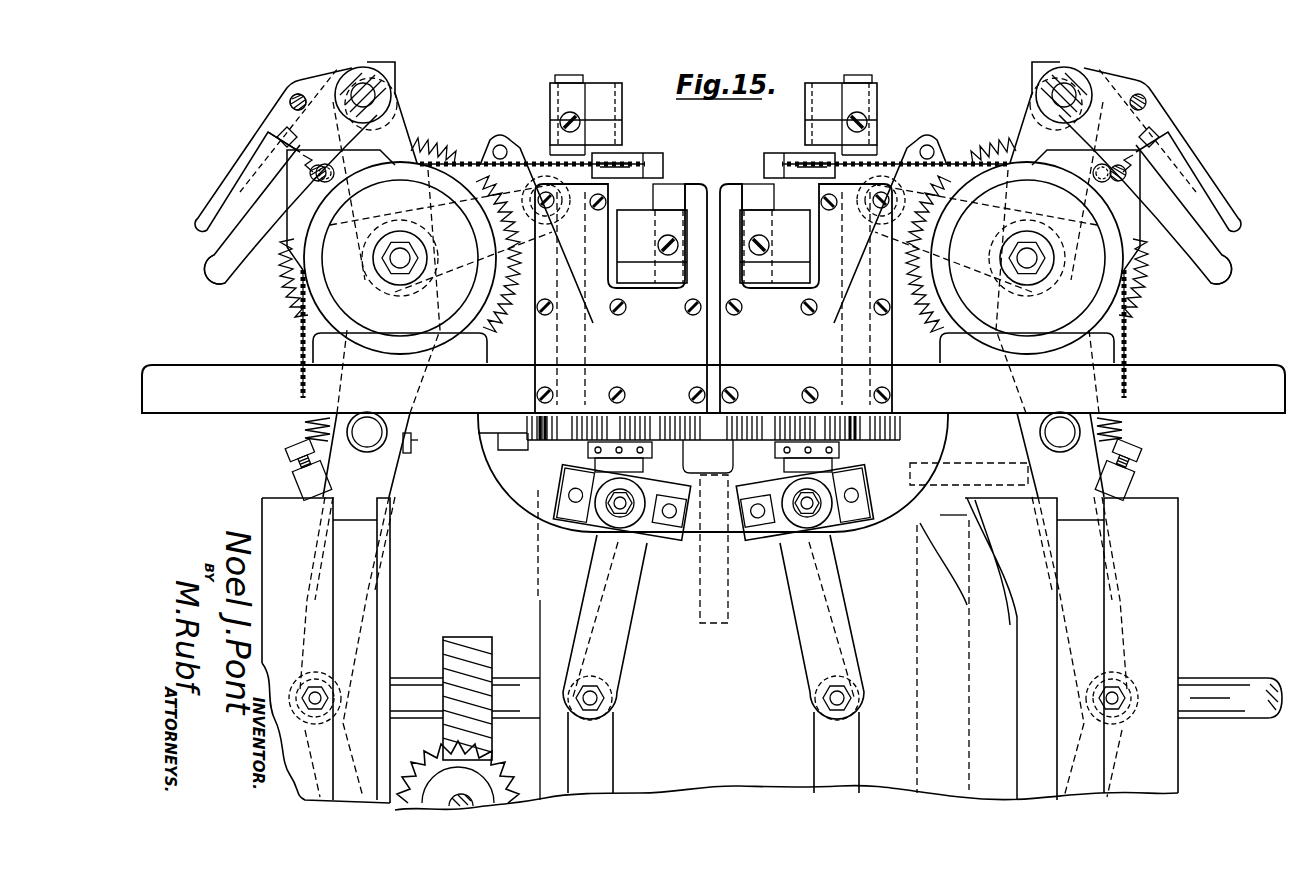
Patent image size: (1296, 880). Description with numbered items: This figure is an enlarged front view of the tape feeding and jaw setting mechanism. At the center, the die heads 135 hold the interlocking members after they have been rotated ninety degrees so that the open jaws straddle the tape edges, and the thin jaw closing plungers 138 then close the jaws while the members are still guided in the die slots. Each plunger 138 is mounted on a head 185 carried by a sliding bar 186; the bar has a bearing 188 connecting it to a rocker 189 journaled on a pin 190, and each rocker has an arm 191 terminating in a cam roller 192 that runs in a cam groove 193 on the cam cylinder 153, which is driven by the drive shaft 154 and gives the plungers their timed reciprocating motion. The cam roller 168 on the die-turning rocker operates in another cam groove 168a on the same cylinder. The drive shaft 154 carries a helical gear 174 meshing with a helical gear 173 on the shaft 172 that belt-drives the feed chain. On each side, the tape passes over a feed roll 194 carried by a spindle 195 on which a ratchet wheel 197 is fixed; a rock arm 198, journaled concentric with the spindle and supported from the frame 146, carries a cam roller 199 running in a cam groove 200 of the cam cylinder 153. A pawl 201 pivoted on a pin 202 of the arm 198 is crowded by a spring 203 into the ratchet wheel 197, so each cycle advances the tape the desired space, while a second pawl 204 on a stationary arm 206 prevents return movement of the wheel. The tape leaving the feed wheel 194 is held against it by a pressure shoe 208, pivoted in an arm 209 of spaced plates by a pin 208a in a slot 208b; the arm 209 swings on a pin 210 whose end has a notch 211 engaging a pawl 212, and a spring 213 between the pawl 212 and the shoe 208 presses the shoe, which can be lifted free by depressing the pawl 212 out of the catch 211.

The die head 135 is at (630, 152).
The jaw closing plunger 138 is at (622, 130).
The frame 146 is at (230, 409).
The cam cylinder 153 is at (693, 775).
The drive shaft 154 is at (1208, 680).
The cam roller 168 is at (937, 506).
The cam groove 168a is at (975, 594).
The shaft 172 is at (452, 808).
The helical gear 173 is at (520, 808).
The helical gear 174 is at (470, 643).
The head 185 is at (556, 135).
The sliding bar 186 is at (683, 283).
The bearing 188 is at (558, 490).
The rocker 189 is at (597, 523).
The pin 190 is at (616, 510).
The arm 191 is at (612, 648).
The cam roller 192 is at (607, 705).
The cam groove 193 is at (607, 762).
The feed roll 194 is at (427, 355).
The spindle 195 is at (410, 262).
The ratchet wheel 197 is at (298, 294).
The rock arm 198 is at (385, 488).
The cam roller 199 is at (330, 690).
The cam groove 200 is at (373, 622).
The pawl 201 is at (411, 440).
The pin 202 is at (370, 440).
The spring 203 is at (303, 433).
The pawl 204 is at (555, 192).
The stationary arm 206 is at (713, 258).
The pressure shoe 208 is at (366, 170).
The pin 208a is at (335, 168).
The slot 208b is at (347, 156).
The arm 209 is at (207, 263).
The pin 210 is at (386, 100).
The notch 211 is at (357, 73).
The pawl 212 is at (256, 137).
The spring 213 is at (300, 152).